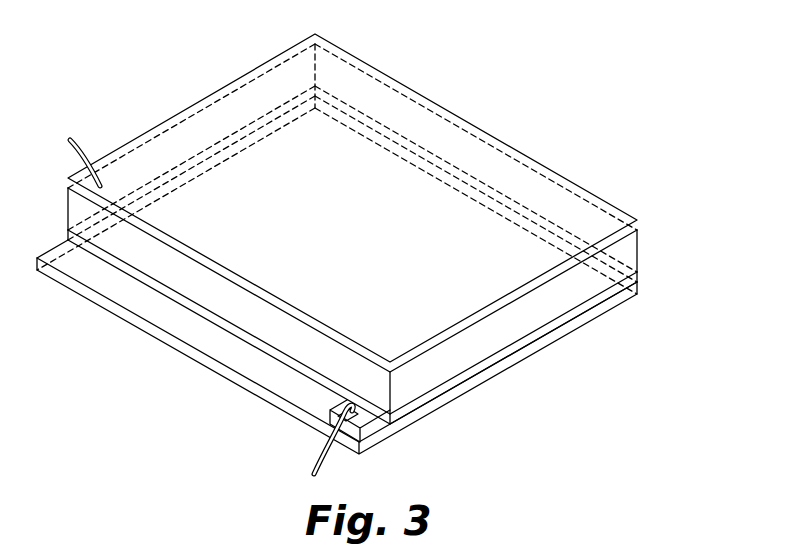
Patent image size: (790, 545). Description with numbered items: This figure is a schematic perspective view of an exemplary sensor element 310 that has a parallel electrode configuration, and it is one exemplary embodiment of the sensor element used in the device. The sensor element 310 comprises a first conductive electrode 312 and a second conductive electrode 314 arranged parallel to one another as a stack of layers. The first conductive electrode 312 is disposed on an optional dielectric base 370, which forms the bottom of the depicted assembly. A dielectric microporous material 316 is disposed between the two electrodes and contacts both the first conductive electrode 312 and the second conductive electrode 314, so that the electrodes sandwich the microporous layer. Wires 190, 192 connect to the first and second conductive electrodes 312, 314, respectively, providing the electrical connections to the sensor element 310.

The sensor element 310 is at (393, 223).
The first conductive electrode 312 is at (628, 280).
The second conductive electrode 314 is at (667, 207).
The dielectric microporous material 316 is at (630, 250).
The dielectric base 370 is at (628, 300).
The wire 190 is at (318, 455).
The wire 192 is at (78, 147).